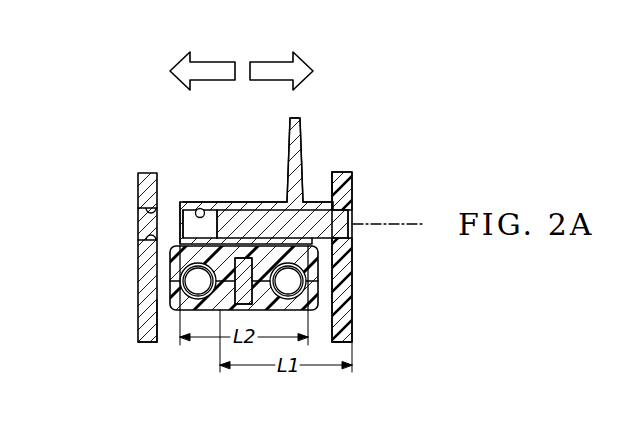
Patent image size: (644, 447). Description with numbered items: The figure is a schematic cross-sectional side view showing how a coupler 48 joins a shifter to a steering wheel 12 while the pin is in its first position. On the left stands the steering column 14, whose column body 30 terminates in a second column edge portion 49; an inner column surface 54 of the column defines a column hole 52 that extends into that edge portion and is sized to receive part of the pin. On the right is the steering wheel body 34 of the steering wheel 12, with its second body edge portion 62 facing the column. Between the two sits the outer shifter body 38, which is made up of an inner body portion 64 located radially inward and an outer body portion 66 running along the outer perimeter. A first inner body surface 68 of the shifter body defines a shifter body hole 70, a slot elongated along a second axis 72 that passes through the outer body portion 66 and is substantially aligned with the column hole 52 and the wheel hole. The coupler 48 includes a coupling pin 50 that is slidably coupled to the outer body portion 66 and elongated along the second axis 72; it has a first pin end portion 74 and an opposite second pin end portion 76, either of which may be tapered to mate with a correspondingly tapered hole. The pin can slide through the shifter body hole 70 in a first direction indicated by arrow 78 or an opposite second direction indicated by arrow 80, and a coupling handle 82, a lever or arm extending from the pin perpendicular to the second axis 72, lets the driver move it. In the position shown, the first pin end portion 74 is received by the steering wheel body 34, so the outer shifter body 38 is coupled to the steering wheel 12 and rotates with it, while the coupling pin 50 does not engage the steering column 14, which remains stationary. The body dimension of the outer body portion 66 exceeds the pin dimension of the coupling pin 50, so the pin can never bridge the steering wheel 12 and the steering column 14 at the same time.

The steering wheel 12 is at (352, 188).
The steering column 14 is at (148, 173).
The column body 30 is at (145, 342).
The steering wheel body 34 is at (352, 323).
The outer shifter body 38 is at (317, 263).
The coupler 48 is at (246, 220).
The second column edge portion 49 is at (158, 322).
The coupling pin 50 is at (325, 203).
The column hole 52 is at (143, 213).
The inner column surface 54 is at (142, 235).
The second body edge portion 62 is at (325, 180).
The inner body portion 64 is at (185, 262).
The outer body portion 66 is at (199, 209).
The first inner body surface 68 is at (201, 209).
The shifter body hole 70 is at (192, 237).
The second axis 72 is at (388, 226).
The first pin end portion 74 is at (352, 215).
The second pin end portion 76 is at (220, 210).
The arrow indicating first direction 78 is at (268, 62).
The arrow indicating second direction 80 is at (217, 62).
The coupling handle 82 is at (308, 125).